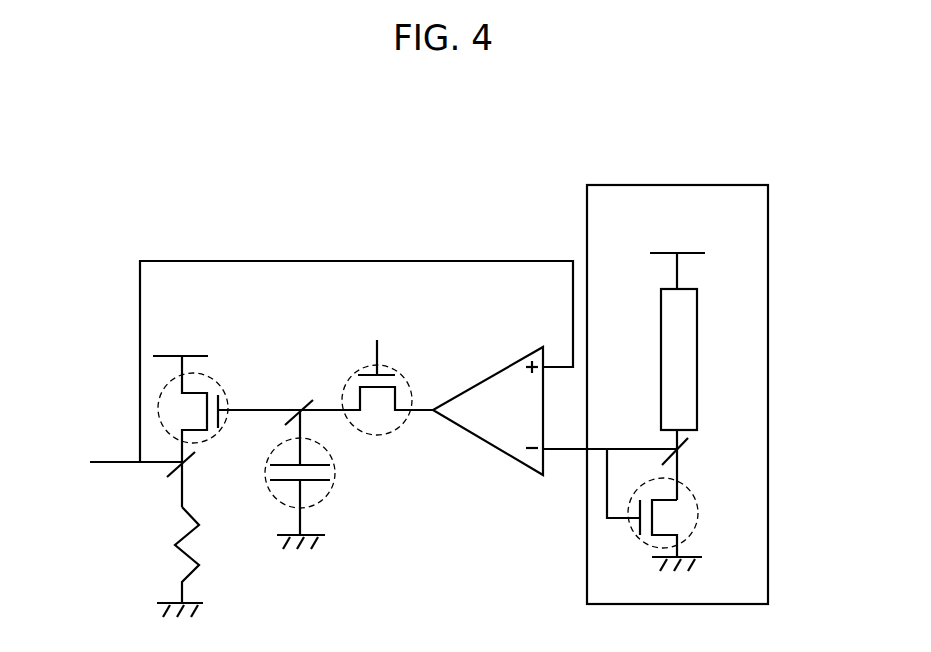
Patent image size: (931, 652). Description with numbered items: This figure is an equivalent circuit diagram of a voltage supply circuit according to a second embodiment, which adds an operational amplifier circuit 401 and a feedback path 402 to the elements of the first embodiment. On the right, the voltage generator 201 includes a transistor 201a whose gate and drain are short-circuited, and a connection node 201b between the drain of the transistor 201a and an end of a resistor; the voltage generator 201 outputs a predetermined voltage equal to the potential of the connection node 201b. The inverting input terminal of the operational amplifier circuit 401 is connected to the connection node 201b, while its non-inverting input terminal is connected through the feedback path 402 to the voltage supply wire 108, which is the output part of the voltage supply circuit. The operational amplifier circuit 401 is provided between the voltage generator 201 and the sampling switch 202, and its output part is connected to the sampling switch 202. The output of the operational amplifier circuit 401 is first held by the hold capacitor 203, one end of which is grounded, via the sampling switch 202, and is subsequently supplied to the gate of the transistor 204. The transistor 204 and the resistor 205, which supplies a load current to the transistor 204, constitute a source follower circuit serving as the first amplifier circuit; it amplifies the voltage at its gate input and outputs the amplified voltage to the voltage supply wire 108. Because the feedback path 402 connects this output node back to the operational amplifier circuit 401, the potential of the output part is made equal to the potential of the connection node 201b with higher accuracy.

The feedback path 402 is at (282, 261).
The voltage supply wire 108 is at (113, 462).
The transistor 204 is at (218, 380).
The resistor 205 is at (185, 557).
The sampling switch 202 is at (348, 380).
The hold capacitor 203 is at (330, 483).
The operational amplifier circuit 401 is at (470, 387).
The voltage generator 201 is at (770, 256).
The transistor 201a is at (697, 507).
The connection node 201b is at (688, 438).